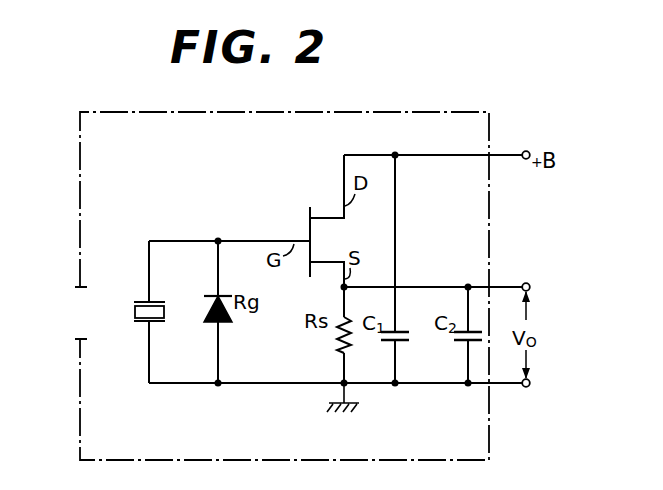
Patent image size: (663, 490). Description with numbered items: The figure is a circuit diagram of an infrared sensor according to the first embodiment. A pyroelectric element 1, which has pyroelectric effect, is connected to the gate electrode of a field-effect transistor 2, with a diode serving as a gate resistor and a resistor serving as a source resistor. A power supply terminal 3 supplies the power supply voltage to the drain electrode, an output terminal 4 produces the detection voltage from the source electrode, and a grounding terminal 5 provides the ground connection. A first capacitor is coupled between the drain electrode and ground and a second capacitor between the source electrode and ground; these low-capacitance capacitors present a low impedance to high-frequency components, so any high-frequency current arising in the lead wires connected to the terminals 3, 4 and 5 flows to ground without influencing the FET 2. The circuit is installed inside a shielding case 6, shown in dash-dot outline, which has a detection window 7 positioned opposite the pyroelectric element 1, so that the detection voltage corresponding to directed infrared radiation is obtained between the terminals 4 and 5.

The pyroelectric element 1 is at (134, 307).
The field-effect transistor 2 is at (309, 222).
The power supply terminal 3 is at (527, 151).
The output terminal 4 is at (530, 284).
The grounding terminal 5 is at (529, 387).
The shielding case 6 is at (489, 218).
The detection window 7 is at (82, 337).